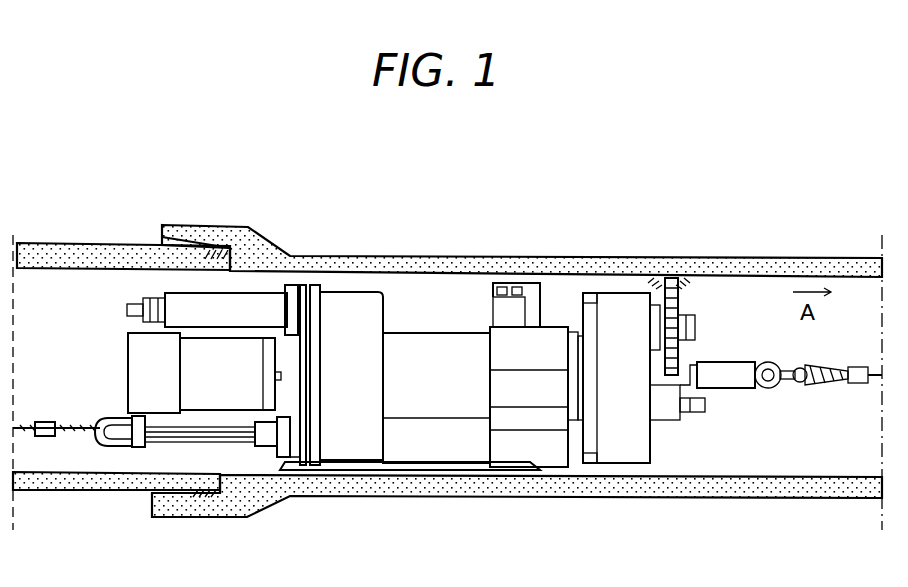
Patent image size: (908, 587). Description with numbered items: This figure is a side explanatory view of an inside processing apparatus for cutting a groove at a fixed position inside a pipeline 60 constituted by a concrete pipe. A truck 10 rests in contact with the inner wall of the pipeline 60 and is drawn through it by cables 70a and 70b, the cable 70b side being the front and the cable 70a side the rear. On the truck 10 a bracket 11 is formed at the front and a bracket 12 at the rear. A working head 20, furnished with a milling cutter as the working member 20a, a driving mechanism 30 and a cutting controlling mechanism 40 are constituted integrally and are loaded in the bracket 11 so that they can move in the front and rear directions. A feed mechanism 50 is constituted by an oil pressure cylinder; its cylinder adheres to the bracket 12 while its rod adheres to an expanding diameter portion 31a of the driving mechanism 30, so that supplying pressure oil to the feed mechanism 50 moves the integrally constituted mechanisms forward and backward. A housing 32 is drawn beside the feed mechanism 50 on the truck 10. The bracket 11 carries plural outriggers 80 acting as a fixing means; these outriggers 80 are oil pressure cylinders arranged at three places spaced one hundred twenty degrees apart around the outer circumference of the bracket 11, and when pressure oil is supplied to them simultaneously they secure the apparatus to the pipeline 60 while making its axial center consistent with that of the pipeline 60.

The truck 10 is at (428, 465).
The bracket 11 is at (550, 340).
The bracket 12 is at (258, 468).
The working head 20 is at (610, 296).
The working member 20a is at (673, 295).
The driving mechanism 30 is at (368, 313).
The expanding diameter portion 31a is at (353, 450).
The housing 32 is at (140, 356).
The cutting controlling mechanism 40 is at (262, 292).
The feed mechanism 50 is at (212, 437).
The pipeline 60 is at (735, 498).
The cable 70a is at (70, 425).
The cable 70b is at (813, 388).
The outriggers 80 is at (498, 313).